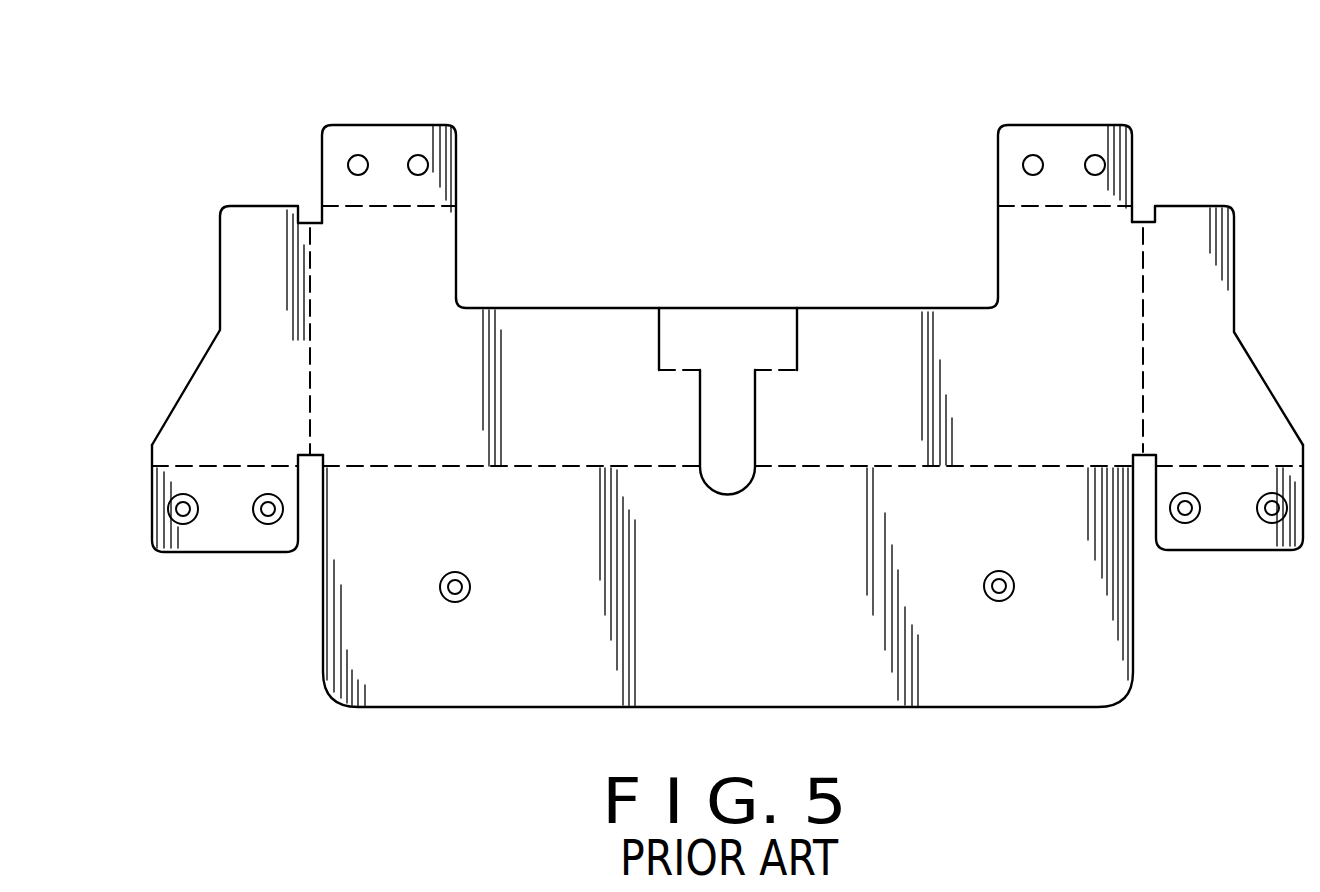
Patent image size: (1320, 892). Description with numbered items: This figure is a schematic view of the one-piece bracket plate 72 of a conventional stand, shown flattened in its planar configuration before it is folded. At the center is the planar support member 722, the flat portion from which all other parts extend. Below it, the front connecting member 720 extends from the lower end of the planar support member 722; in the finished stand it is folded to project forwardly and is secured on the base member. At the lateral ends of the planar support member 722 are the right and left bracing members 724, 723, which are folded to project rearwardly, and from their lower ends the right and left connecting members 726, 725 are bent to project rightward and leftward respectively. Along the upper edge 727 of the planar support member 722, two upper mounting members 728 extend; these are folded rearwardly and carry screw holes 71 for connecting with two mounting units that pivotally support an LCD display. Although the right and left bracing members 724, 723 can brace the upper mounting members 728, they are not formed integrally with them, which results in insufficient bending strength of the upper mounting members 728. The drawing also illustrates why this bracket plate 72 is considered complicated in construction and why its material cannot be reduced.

The bracket plate 72 is at (789, 284).
The screw holes 71 is at (1091, 155).
The front connecting member 720 is at (806, 676).
The planar support member 722 is at (552, 333).
The left bracing member 723 is at (240, 353).
The right bracing member 724 is at (1218, 370).
The left connecting member 725 is at (232, 538).
The right connecting member 726 is at (1223, 523).
The upper edge 727 is at (388, 210).
The upper mounting members 728 is at (393, 152).